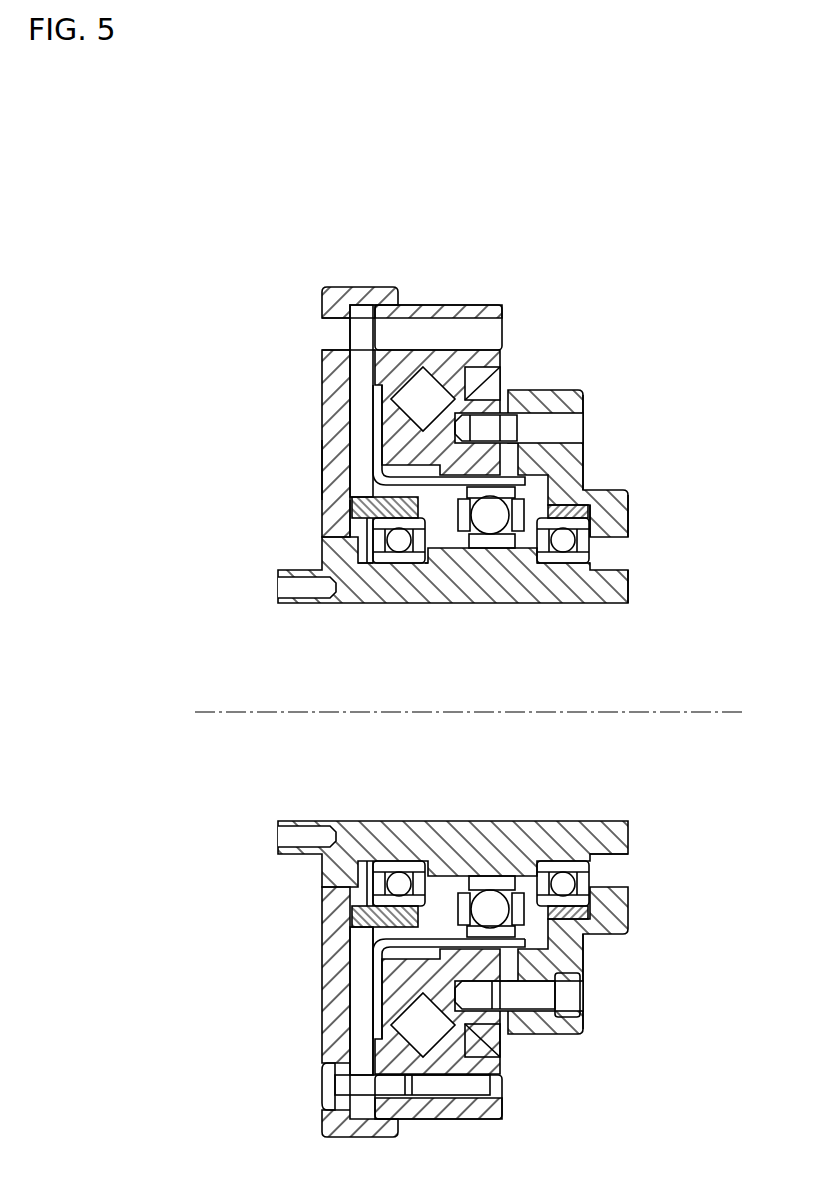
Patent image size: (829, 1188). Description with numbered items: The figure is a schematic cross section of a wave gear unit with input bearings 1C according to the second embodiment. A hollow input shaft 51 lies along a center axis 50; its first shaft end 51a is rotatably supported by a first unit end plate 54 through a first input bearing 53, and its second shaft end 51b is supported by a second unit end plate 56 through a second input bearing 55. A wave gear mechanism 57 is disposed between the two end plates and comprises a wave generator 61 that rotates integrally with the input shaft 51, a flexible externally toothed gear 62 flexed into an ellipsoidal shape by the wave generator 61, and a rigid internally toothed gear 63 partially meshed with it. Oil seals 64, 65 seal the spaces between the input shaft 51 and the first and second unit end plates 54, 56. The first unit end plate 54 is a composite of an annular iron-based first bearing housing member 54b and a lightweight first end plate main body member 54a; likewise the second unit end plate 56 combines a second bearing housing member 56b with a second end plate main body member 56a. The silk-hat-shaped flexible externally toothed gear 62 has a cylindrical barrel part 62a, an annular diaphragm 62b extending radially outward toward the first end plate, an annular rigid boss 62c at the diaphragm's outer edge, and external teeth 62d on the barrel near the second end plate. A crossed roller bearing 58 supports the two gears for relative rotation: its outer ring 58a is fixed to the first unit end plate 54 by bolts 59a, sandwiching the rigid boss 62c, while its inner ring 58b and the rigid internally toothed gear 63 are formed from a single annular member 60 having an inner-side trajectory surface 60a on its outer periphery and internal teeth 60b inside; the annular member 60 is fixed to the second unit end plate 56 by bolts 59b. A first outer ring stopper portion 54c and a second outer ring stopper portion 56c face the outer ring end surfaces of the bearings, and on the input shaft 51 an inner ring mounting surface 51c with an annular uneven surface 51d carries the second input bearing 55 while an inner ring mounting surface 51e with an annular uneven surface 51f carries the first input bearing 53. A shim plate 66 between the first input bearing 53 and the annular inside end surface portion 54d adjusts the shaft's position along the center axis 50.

The wave gear unit with input bearings 1C is at (538, 663).
The center axis 50 is at (656, 716).
The hollow input shaft 51 is at (424, 690).
The first shaft end 51a is at (345, 580).
The second shaft end 51b is at (598, 600).
The inner ring mounting surface 51c is at (392, 567).
The annular uneven surface 51d is at (436, 567).
The inner ring mounting surface 51e is at (554, 568).
The annular uneven surface 51f is at (521, 567).
The first input bearing 53 is at (399, 566).
The first unit end plate 54 is at (301, 712).
The first end plate main body member 54a is at (330, 435).
The first bearing housing member 54b is at (330, 462).
The first outer ring stopper portion 54c is at (337, 502).
The annular inside end surface portion 54d is at (330, 712).
The second input bearing 55 is at (561, 566).
The second unit end plate 56 is at (632, 475).
The second end plate main body member 56a is at (584, 466).
The second bearing housing member 56b is at (592, 492).
The second outer ring stopper portion 56c is at (592, 560).
The wave gear mechanism 57 is at (529, 692).
The crossed roller bearing 58 is at (536, 668).
The outer ring 58a is at (449, 304).
The inner ring 58b is at (503, 1045).
The bolts 59a is at (324, 1084).
The bolts 59b is at (581, 998).
The annular member 60 is at (599, 999).
The inner-side trajectory surface 60a is at (472, 1030).
The internal teeth 60b is at (584, 950).
The wave generator 61 is at (469, 551).
The flexible externally toothed gear 62 is at (386, 690).
The cylindrical barrel part 62a is at (400, 931).
The annular diaphragm 62b is at (368, 990).
The annular rigid boss 62c is at (360, 1053).
The external teeth 62d is at (386, 969).
The rigid internally toothed gear 63 is at (470, 1025).
The oil seal 64 is at (336, 858).
The oil seal 65 is at (598, 857).
The shim plate 66 is at (360, 569).